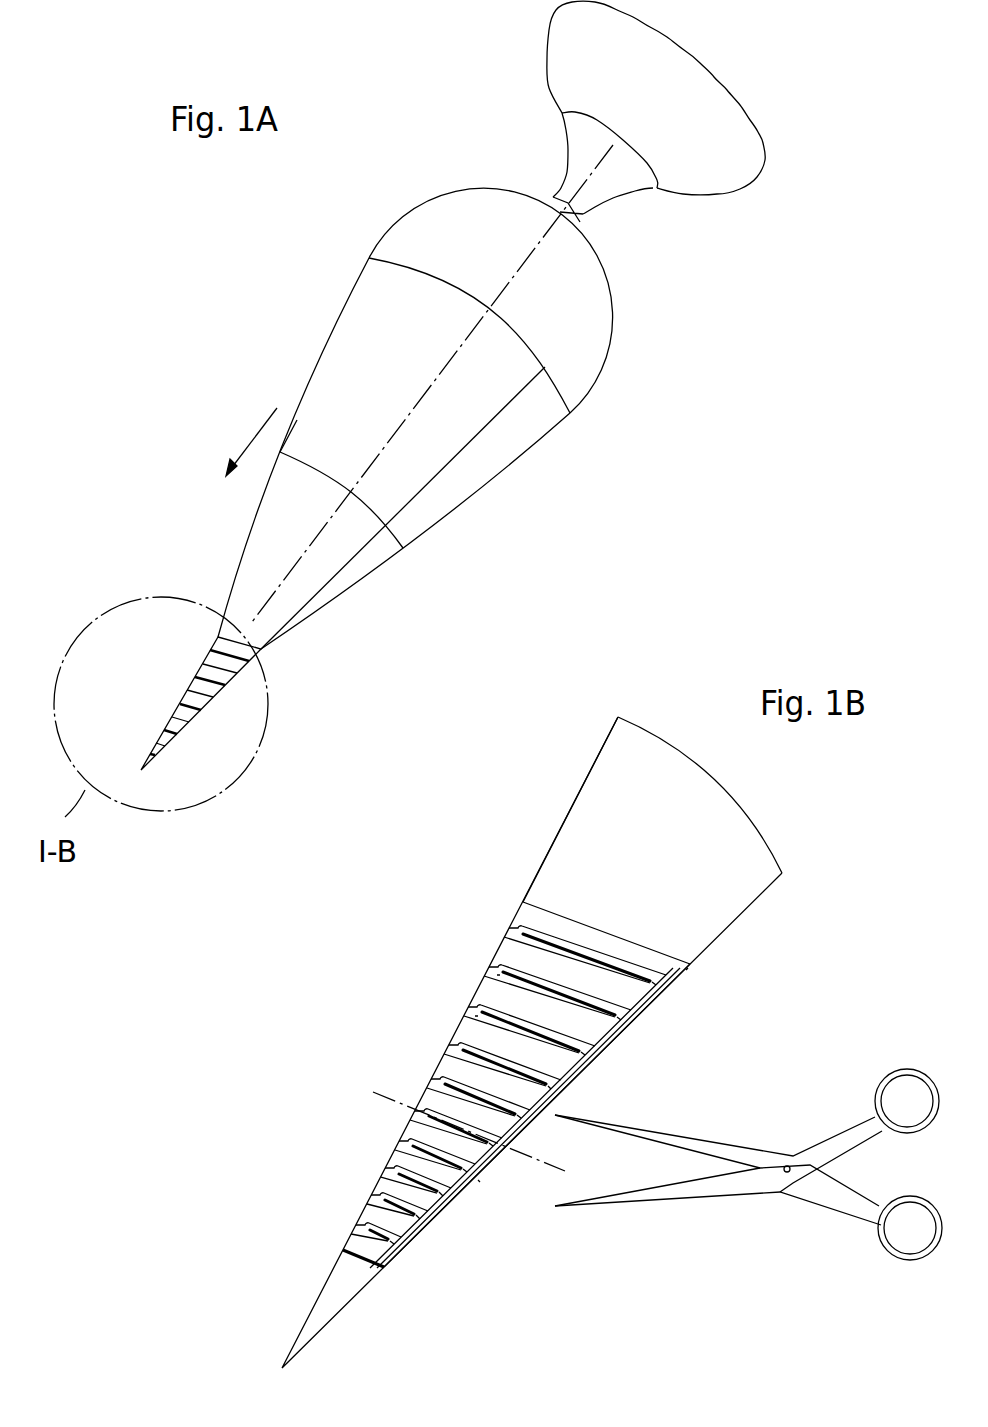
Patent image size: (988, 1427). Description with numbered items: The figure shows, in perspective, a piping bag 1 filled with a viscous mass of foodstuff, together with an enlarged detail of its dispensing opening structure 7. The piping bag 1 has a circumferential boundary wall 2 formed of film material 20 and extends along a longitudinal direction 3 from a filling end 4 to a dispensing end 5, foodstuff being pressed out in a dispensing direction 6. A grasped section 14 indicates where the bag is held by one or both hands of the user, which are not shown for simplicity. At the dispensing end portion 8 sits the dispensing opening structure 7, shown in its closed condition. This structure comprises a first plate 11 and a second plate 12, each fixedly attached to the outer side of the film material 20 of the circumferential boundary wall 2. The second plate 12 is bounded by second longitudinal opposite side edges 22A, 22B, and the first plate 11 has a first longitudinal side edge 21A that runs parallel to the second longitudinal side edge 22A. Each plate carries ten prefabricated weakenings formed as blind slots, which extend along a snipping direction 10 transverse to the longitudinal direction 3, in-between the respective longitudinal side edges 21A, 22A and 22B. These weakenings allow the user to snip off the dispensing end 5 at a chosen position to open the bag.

In FIG. 1A, the piping bag 1 is at (259, 246).
In FIG. 1A, the circumferential boundary wall 2 is at (417, 187).
In FIG. 1A, the longitudinal direction 3 is at (418, 398).
In FIG. 1A, the filling end 4 is at (738, 72).
In FIG. 1A, the dispensing end 5 is at (145, 777).
In FIG. 1A, the dispensing direction 6 is at (258, 430).
In FIG. 1A, the dispensing opening structure 7 is at (287, 697).
In FIG. 1B, the dispensing opening structure 7 is at (819, 815).
In FIG. 1A, the dispensing end portion 8 is at (187, 610).
In FIG. 1B, the snipping direction 10 is at (375, 1090).
In FIG. 1A, the first plate 11 is at (403, 508).
In FIG. 1B, the first plate 11 is at (611, 1071).
In FIG. 1B, the second plate 12 is at (523, 958).
In FIG. 1A, the grasped section 14 is at (602, 219).
In FIG. 1A, the film material 20 is at (733, 162).
In FIG. 1B, the film material 20 is at (610, 786).
In FIG. 1B, the first longitudinal opposite side edge 21A is at (645, 1003).
In FIG. 1B, the second longitudinal opposite side edge 22A is at (690, 970).
In FIG. 1B, the second longitudinal opposite side edge 22B is at (482, 992).